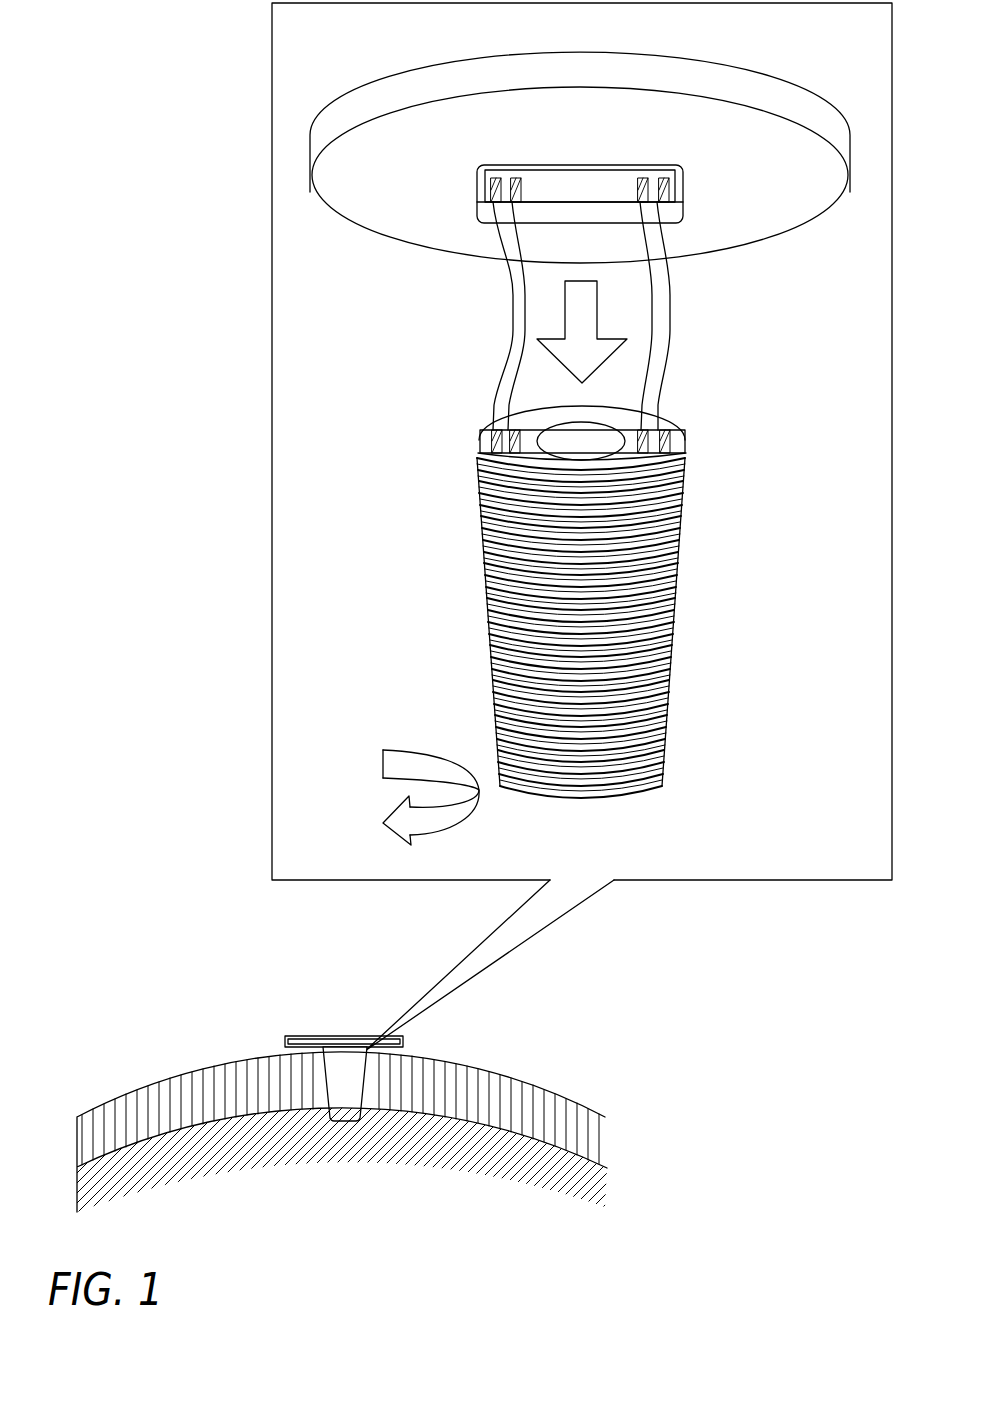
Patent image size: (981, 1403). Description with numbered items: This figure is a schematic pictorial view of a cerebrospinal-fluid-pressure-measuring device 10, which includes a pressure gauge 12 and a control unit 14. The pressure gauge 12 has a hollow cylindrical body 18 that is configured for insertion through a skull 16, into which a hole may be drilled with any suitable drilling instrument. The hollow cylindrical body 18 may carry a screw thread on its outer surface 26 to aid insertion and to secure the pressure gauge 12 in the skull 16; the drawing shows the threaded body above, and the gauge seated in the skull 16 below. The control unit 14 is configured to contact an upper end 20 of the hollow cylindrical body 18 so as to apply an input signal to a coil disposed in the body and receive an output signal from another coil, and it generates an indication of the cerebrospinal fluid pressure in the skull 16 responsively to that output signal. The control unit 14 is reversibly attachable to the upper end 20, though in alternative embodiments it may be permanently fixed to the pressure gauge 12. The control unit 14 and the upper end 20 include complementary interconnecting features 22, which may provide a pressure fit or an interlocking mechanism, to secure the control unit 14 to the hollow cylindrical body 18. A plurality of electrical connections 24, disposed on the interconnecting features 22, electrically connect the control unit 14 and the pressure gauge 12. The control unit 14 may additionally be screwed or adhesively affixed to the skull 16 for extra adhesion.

The cerebrospinal-fluid-pressure-measuring device 10 is at (177, 775).
The pressure gauge 12 is at (550, 800).
The control unit 14 is at (310, 143).
The skull 16 is at (583, 1097).
The hollow cylindrical body 18 is at (580, 628).
The upper end 20 is at (478, 432).
The interconnecting features 22 is at (685, 198).
The electrical connections 24 is at (582, 316).
The outer surface 26 is at (477, 502).